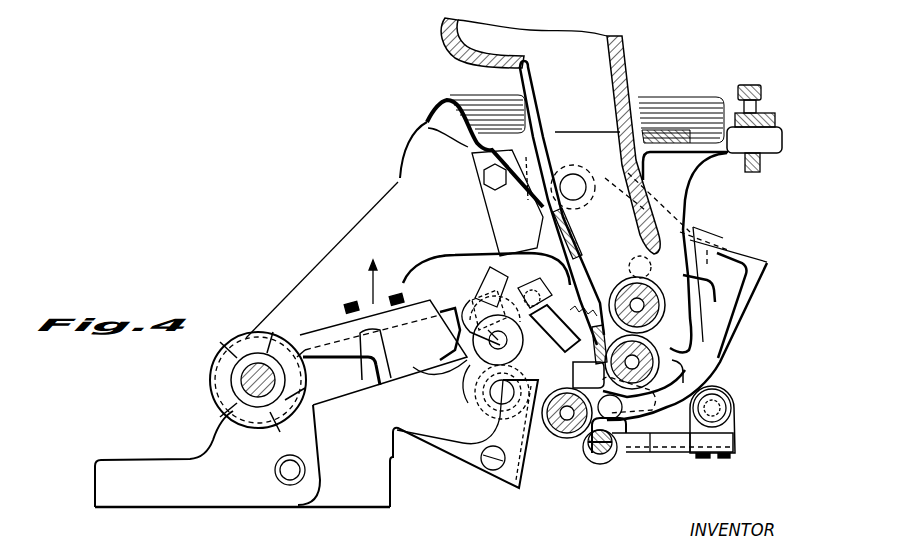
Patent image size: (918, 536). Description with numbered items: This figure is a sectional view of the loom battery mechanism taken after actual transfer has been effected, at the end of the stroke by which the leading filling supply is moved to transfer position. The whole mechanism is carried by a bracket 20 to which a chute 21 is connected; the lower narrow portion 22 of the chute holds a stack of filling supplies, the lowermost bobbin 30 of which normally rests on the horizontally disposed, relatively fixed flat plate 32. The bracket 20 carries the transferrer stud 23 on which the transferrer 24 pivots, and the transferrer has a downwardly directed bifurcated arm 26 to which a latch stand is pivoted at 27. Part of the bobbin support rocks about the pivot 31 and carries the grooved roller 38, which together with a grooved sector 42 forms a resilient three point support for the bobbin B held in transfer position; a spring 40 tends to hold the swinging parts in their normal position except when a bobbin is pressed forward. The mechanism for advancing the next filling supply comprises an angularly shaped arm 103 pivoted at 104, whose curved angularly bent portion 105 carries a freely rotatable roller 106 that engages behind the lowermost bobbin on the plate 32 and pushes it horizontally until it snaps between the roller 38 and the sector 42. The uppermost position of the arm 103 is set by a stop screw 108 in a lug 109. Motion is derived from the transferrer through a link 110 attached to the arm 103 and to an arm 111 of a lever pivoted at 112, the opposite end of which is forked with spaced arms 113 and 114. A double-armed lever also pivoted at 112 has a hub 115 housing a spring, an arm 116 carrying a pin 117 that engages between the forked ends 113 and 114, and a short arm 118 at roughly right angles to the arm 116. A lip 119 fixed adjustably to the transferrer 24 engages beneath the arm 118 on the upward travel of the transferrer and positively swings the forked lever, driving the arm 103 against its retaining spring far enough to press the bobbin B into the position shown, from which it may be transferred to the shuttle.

The bracket 20 is at (371, 222).
The chute 21 is at (520, 72).
The lower narrow portion of chute 22 is at (560, 135).
The transferrer stud 23 is at (255, 372).
The transferrer 24 is at (317, 340).
The bifurcated arm 26 is at (260, 443).
The pivot 27 is at (290, 472).
The lowermost bobbin 30 is at (668, 360).
The pivot 31 is at (715, 405).
The flat plate 32 is at (647, 440).
The roller 38 is at (597, 463).
The spring 40 is at (730, 410).
The grooved sector 42 is at (463, 463).
The angularly shaped arm 103 is at (710, 240).
The pivot 104 is at (586, 190).
The curved angularly bent portion 105 is at (702, 345).
The roller 106 is at (617, 437).
The stop screw 108 is at (762, 165).
The lug 109 is at (768, 135).
The link 110 is at (600, 293).
The arm of forked lever 111 is at (480, 370).
The pivot point 112 is at (517, 303).
The forked arm 113 is at (483, 290).
The forked arm 114 is at (557, 310).
The hub 115 is at (480, 360).
The arm 116 is at (485, 285).
The pin 117 is at (535, 288).
The short arm 118 is at (477, 317).
The lip 119 is at (453, 330).
The bobbin B is at (563, 437).